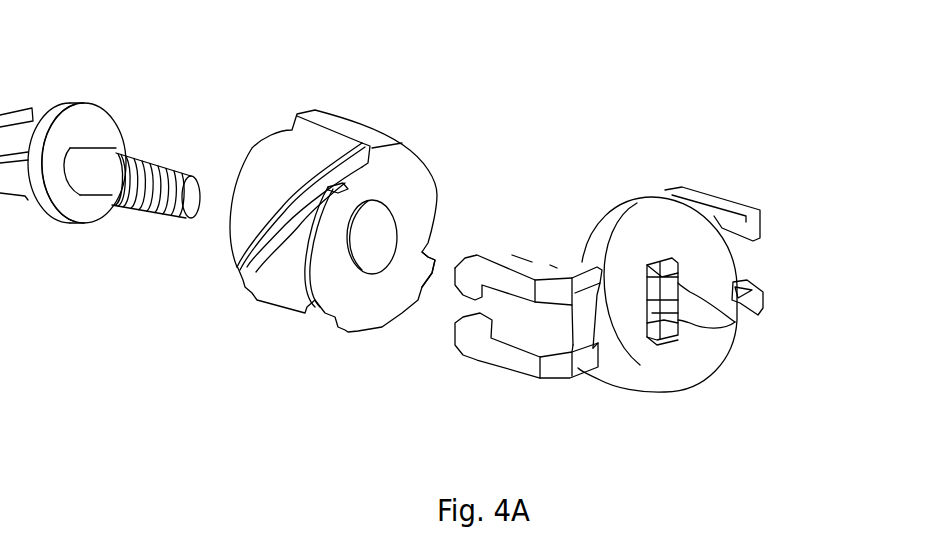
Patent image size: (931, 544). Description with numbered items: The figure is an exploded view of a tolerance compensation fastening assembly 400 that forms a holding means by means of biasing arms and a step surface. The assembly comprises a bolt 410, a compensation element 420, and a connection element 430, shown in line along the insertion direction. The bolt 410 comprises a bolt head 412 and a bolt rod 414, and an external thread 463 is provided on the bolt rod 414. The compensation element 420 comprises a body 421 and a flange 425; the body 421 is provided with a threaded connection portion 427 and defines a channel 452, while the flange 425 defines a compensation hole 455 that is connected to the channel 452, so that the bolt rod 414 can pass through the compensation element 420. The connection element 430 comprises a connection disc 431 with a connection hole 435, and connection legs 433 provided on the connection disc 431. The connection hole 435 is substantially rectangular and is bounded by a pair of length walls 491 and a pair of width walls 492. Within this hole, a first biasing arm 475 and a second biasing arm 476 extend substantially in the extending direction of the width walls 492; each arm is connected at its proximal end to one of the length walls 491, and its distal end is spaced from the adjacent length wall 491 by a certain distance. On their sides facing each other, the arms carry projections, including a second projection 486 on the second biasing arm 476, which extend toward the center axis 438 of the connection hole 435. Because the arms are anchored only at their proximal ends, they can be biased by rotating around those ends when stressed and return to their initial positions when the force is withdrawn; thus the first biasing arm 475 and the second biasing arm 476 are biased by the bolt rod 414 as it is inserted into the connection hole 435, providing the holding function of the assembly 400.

The tolerance compensation fastening assembly 400 is at (683, 112).
The bolt 410 is at (132, 98).
The bolt head 412 is at (70, 105).
The bolt rod 414 is at (137, 202).
The external thread 463 is at (170, 162).
The compensation element 420 is at (444, 150).
The body 421 is at (232, 212).
The threaded connection portion 427 is at (254, 262).
The channel 452 is at (363, 307).
The compensation hole 455 is at (383, 243).
The flange 425 is at (405, 282).
The connection element 430 is at (723, 177).
The connection disc 431 is at (663, 370).
The connection legs 433 is at (752, 206).
The connection hole 435 is at (735, 322).
The center axis 438 is at (527, 262).
The width walls 492 is at (632, 222).
The first biasing arm 475 is at (668, 258).
The length walls 491 is at (688, 330).
The second biasing arm 476 is at (680, 347).
The second projection 486 is at (657, 350).